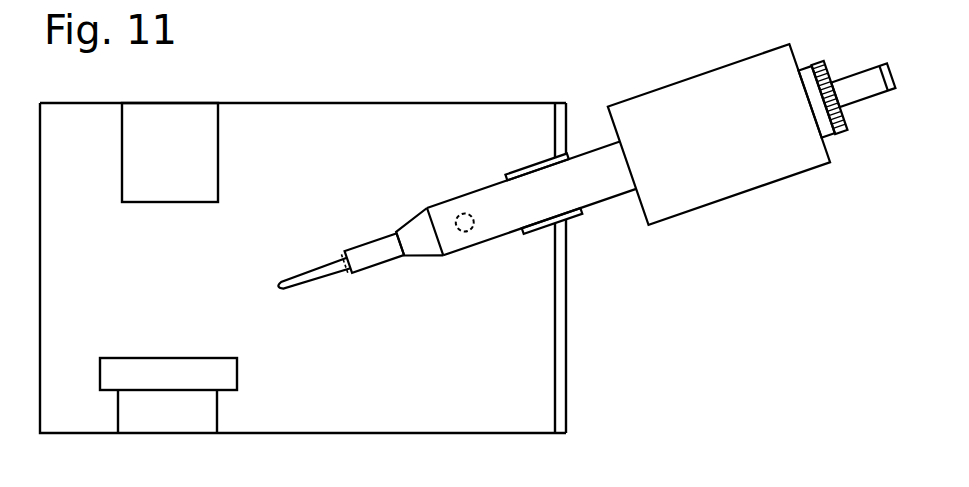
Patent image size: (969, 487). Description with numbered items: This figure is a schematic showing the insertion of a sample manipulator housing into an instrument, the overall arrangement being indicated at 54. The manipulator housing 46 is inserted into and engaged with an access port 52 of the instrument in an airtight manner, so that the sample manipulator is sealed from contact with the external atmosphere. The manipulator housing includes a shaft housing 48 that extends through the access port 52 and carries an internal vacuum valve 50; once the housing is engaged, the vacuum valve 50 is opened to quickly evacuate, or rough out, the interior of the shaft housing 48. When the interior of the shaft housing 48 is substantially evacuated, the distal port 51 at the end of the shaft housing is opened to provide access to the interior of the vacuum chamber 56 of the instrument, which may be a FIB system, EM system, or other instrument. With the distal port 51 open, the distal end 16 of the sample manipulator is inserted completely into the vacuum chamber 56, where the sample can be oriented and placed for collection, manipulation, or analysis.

The distal end 16 is at (297, 272).
The manipulator housing 46 is at (670, 85).
The shaft housing 48 is at (498, 228).
The vacuum valve 50 is at (461, 214).
The distal port 51 is at (340, 253).
The access port 52 is at (580, 212).
The dispensing assembly 54 is at (376, 50).
The vacuum chamber 56 is at (323, 431).